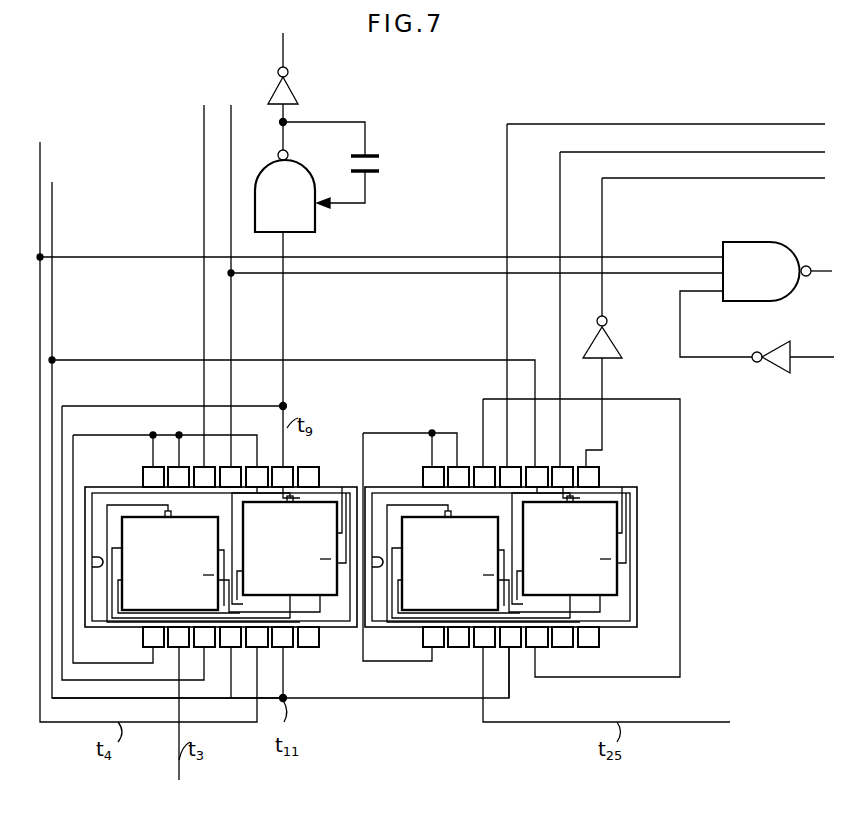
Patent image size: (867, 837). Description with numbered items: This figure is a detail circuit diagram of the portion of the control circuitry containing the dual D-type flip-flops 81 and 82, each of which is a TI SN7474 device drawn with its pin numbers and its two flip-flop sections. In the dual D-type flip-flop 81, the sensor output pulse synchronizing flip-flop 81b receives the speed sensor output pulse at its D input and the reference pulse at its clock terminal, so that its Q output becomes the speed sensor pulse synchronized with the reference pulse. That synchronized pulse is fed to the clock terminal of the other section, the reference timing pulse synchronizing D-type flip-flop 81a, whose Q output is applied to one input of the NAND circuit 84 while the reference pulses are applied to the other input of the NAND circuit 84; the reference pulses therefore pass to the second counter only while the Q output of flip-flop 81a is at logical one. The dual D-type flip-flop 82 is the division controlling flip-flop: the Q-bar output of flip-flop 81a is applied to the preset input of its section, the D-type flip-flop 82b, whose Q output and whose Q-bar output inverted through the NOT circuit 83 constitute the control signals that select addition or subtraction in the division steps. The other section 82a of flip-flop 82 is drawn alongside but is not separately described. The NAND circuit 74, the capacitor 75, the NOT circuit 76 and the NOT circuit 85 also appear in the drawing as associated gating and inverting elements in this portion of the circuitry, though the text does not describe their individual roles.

The NAND gate 74 is at (316, 212).
The capacitor 75 is at (379, 162).
The inverter 76 is at (276, 85).
The dual D-type flip-flop 81 is at (209, 593).
The reference timing pulse synchronizing D-type flip-flop 81a is at (134, 516).
The sensor output pulse synchronizing flip-flop 81b is at (300, 597).
The dual D-type flip-flop 82 is at (546, 560).
The first flip-flop of circuit 82 82a is at (433, 534).
The D-type flip-flop 82b is at (575, 562).
The NOT circuit 83 is at (613, 332).
The NAND circuit 84 is at (760, 241).
The inverter 85 is at (777, 374).